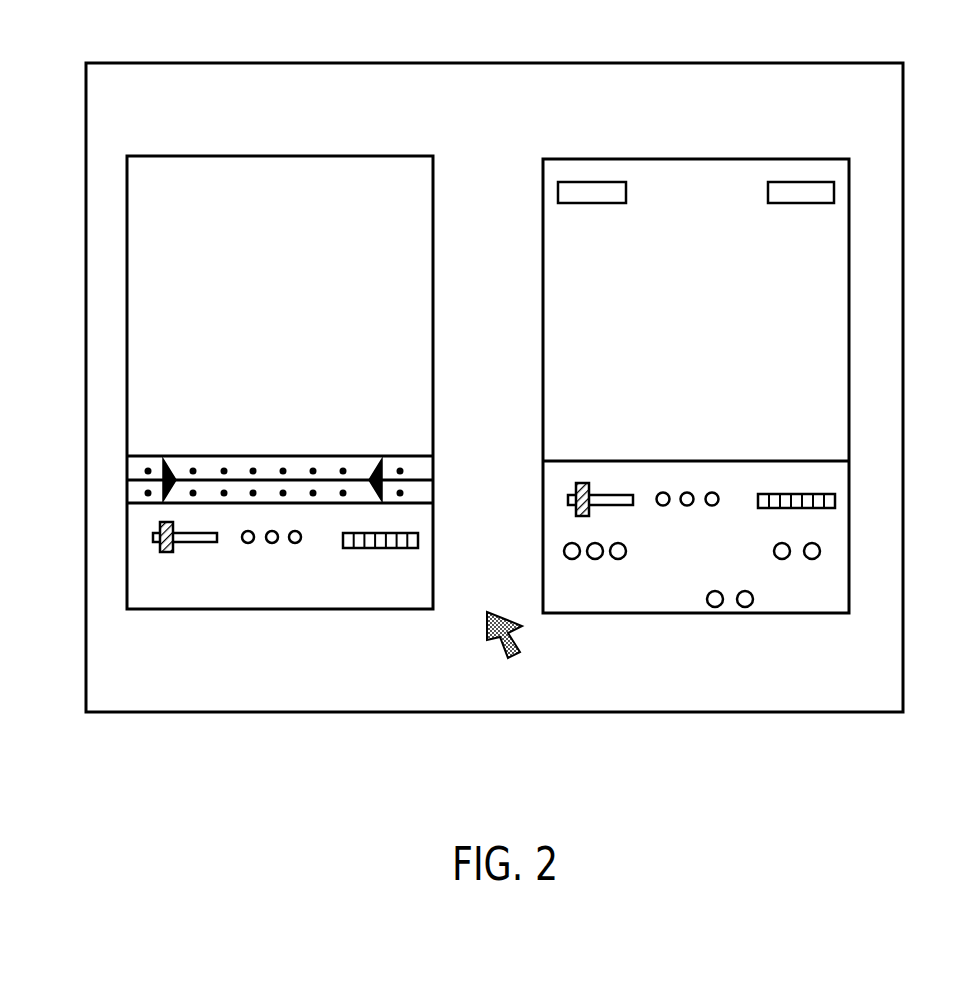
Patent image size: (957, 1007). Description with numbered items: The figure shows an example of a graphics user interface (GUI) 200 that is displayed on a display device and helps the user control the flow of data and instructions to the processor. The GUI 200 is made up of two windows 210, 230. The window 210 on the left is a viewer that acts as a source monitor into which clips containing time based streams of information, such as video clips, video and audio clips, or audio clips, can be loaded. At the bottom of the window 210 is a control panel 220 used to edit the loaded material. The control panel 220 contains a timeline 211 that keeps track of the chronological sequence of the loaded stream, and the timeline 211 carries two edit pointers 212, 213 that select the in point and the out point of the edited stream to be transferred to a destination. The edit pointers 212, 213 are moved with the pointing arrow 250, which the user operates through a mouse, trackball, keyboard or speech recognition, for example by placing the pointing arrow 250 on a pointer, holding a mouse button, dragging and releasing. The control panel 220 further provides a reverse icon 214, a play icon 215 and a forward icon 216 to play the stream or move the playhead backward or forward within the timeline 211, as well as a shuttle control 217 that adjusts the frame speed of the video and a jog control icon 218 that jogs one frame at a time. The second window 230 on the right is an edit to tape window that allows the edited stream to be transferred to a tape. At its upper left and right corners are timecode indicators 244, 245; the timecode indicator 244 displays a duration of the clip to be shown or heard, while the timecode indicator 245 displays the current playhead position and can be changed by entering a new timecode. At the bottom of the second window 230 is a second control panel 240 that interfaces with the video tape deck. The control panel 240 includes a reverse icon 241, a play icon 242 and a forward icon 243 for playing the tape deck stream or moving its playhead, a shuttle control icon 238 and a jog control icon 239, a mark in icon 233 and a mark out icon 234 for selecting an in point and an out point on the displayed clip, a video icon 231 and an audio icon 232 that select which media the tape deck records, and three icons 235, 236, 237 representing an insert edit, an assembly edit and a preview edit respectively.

The graphics user interface 200 is at (365, 63).
The window 210 is at (118, 236).
The timeline 211 is at (314, 497).
The edit pointer 212 is at (164, 470).
The edit pointer 213 is at (380, 470).
The reverse icon 214 is at (248, 543).
The play icon 215 is at (272, 543).
The forward icon 216 is at (295, 543).
The shuttle control 217 is at (186, 549).
The jog control icon 218 is at (393, 548).
The control panel 220 is at (181, 590).
The second window 230 is at (850, 212).
The video icon 231 is at (782, 559).
The audio icon 232 is at (812, 559).
The mark in icon 233 is at (715, 607).
The mark out icon 234 is at (745, 607).
The insert edit icon 235 is at (572, 559).
The assembly edit icon 236 is at (595, 559).
The preview edit icon 237 is at (618, 559).
The shuttle control icon 238 is at (575, 497).
The jog control icon 239 is at (836, 500).
The second control panel 240 is at (850, 520).
The reverse icon 241 is at (663, 493).
The play icon 242 is at (687, 493).
The forward icon 243 is at (712, 493).
The timecode indicator 244 is at (590, 182).
The timecode indicator 245 is at (795, 182).
The pointing arrow 250 is at (508, 658).